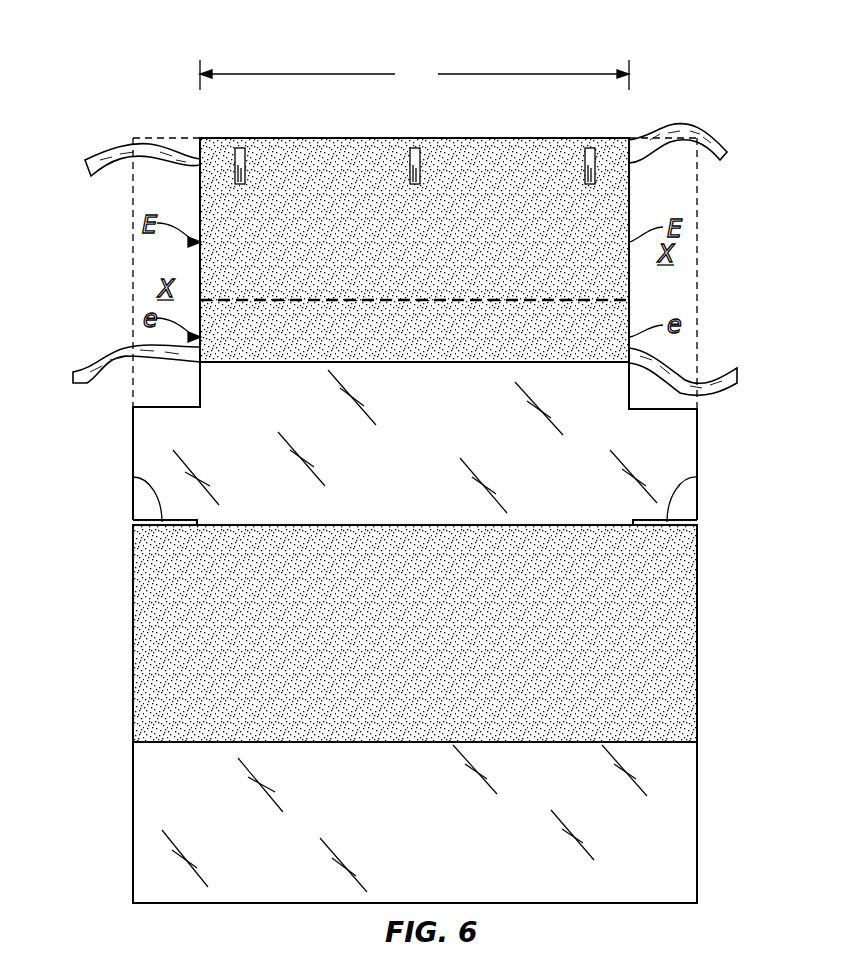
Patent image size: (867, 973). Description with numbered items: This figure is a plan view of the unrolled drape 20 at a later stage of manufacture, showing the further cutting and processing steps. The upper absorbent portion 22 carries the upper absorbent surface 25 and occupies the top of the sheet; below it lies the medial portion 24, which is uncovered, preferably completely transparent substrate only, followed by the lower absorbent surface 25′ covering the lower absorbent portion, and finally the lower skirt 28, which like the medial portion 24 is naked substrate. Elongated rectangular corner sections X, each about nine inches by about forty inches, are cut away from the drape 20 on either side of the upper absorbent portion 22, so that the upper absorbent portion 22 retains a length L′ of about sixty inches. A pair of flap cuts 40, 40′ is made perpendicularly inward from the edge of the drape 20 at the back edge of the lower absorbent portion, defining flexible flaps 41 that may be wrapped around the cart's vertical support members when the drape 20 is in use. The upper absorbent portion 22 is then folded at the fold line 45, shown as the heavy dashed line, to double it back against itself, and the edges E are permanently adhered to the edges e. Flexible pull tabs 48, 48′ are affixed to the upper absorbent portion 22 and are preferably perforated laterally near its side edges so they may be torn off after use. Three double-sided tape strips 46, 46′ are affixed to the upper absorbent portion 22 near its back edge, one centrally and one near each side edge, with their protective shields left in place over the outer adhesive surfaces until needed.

The drape 20 is at (575, 60).
The upper absorbent portion 22 is at (588, 223).
The medial portion 24 is at (432, 449).
The upper absorbent surface 25 is at (432, 262).
The lower absorbent surface 25′ is at (432, 647).
The lower skirt 28 is at (432, 836).
The flap cut 40 is at (133, 477).
The flap cut 40′ is at (697, 477).
The flexible flap 41 is at (152, 449).
The fold line 45 is at (629, 302).
The double-sided tape strip 46 is at (412, 147).
The double-sided tape strip 46′ is at (238, 147).
The flexible pull tab 48 is at (87, 166).
The flexible pull tab 48′ is at (86, 371).